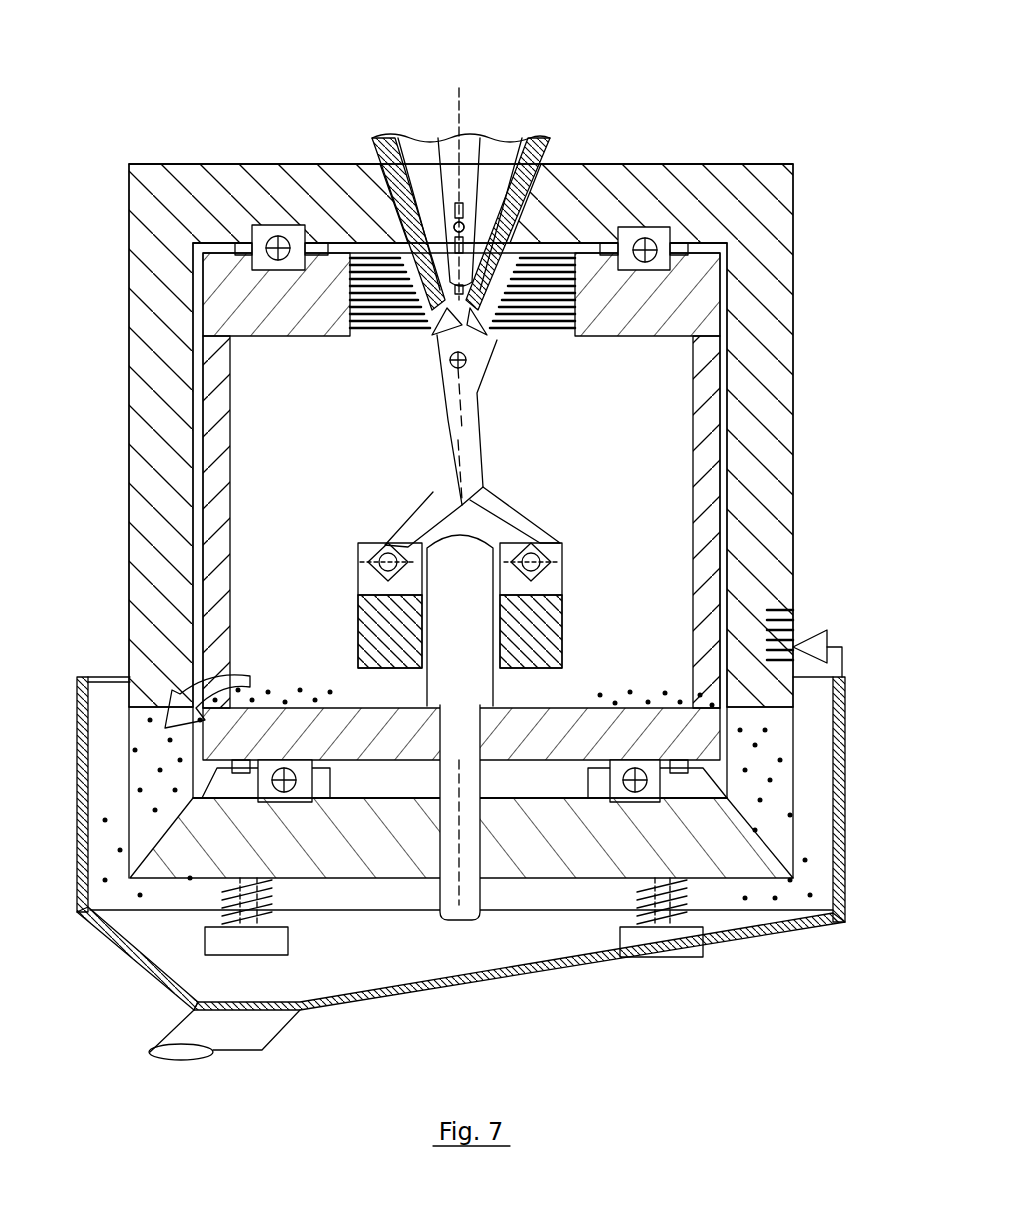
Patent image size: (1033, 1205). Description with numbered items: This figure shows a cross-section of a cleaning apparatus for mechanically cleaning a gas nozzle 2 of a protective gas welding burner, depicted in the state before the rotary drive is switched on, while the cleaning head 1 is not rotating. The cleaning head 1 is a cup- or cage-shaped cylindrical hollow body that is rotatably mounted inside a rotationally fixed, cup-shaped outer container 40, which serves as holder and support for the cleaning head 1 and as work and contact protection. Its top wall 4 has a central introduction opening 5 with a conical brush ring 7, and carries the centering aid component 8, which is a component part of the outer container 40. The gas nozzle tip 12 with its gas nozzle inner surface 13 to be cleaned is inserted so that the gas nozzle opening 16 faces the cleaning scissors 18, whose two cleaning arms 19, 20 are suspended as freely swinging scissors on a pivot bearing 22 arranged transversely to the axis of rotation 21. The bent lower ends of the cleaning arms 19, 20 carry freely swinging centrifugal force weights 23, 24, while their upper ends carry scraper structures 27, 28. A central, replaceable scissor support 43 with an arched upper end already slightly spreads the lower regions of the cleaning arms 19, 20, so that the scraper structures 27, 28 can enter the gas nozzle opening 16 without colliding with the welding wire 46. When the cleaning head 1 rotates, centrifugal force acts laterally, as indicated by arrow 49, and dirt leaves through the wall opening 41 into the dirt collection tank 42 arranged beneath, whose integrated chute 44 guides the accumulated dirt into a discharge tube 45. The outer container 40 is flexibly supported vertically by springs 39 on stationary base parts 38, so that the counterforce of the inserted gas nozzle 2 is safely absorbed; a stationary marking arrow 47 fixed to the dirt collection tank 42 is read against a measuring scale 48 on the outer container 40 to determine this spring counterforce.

The cleaning head 1 is at (683, 418).
The gas nozzle 2 is at (400, 112).
The top wall 4 is at (276, 340).
The central introduction opening 5 is at (525, 340).
The brush ring 7 is at (370, 340).
The centering aid component 8 is at (240, 192).
The gas nozzle tip 12 is at (410, 185).
The gas nozzle inner surface 13 is at (438, 325).
The gas nozzle opening 16 is at (475, 308).
The cleaning scissors 18 is at (580, 440).
The cleaning arm 19 is at (448, 483).
The cleaning arm 20 is at (478, 465).
The axis of rotation 21 is at (455, 855).
The pivot bearing 22 is at (447, 355).
The centrifugal force weight 23 is at (542, 628).
The centrifugal force weight 24 is at (376, 633).
The scraper structure 27 is at (450, 365).
The scraper structure 28 is at (485, 325).
The stationary base part 38 is at (660, 957).
The spring 39 is at (690, 918).
The outer container 40 is at (783, 419).
The wall opening 41 is at (743, 718).
The dirt collection tank 42 is at (464, 984).
The scissor support 43 is at (463, 550).
The chute 44 is at (418, 977).
The discharge tube 45 is at (228, 1040).
The welding wire 46 is at (473, 290).
The marking arrow 47 is at (830, 648).
The measuring scale 48 is at (797, 606).
The arrow 49 is at (178, 665).